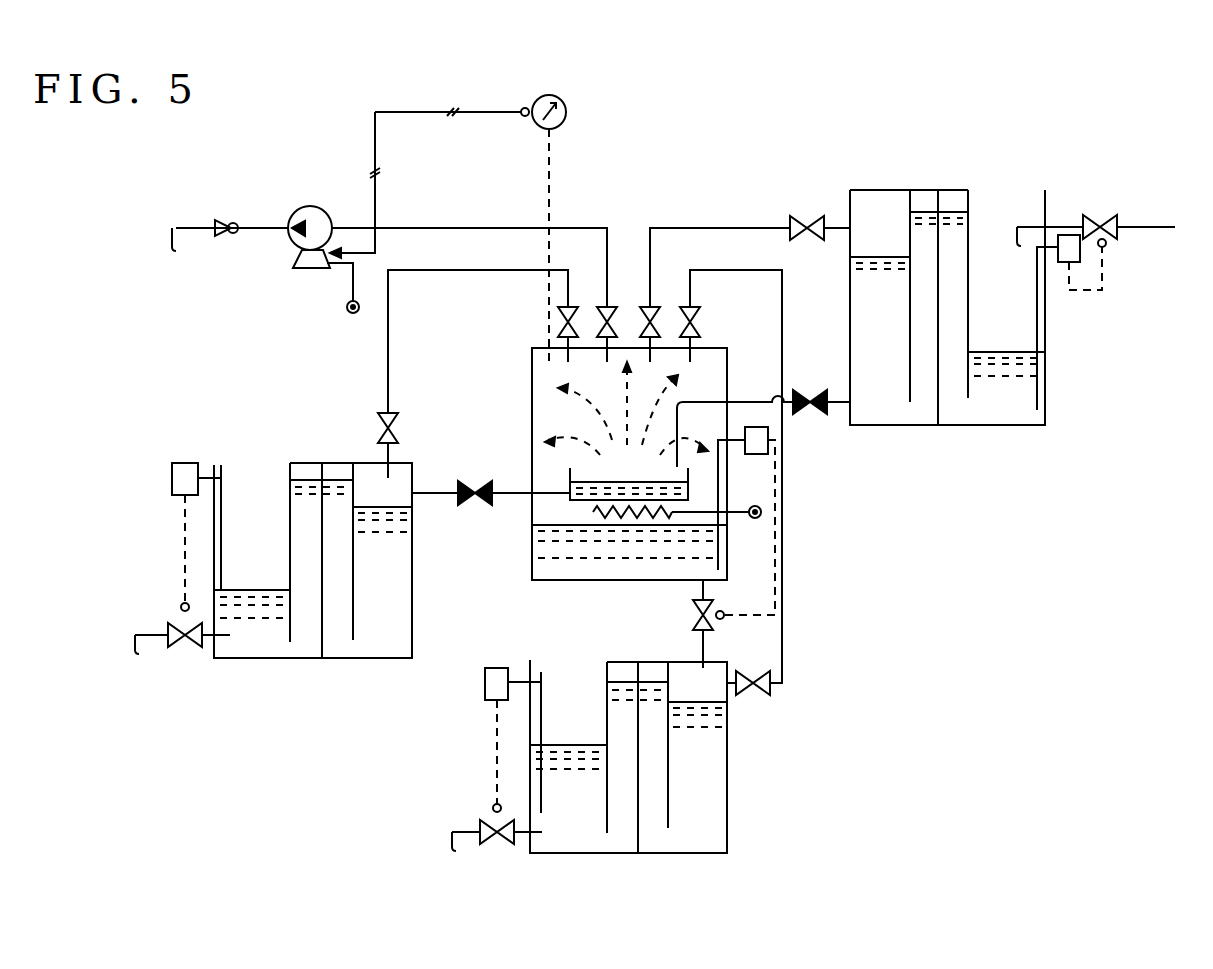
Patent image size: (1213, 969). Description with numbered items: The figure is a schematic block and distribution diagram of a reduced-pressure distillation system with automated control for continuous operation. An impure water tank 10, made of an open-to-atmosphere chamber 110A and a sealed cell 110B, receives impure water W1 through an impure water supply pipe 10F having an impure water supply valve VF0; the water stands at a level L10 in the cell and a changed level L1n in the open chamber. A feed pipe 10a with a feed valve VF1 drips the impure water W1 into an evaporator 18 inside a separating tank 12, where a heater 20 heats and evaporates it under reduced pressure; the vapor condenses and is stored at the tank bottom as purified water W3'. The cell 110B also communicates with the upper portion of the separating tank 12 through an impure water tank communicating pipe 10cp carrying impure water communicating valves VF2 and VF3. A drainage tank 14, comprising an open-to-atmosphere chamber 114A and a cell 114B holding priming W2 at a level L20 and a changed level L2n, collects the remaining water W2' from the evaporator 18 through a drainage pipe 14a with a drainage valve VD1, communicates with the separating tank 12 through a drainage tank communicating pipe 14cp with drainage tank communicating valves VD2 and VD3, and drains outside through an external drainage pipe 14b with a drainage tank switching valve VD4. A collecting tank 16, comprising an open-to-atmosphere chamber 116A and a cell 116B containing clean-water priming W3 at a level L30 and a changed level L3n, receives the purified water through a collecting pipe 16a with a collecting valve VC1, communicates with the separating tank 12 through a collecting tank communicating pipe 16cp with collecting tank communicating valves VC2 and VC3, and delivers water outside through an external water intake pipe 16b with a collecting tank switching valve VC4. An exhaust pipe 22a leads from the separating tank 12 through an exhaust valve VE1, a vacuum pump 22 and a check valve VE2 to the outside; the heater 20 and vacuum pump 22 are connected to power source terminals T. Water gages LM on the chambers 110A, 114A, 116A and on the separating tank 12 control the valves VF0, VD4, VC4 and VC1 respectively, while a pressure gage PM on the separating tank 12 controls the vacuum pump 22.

The impure water tank 10 is at (903, 183).
The feed pipe 10a is at (745, 402).
The impure water tank communicating pipe 10cp is at (690, 227).
The impure water supply pipe 10F is at (1163, 227).
The separating tank 12 is at (525, 351).
The drainage tank 14 is at (280, 460).
The drainage pipe 14a is at (510, 494).
The external drainage pipe 14b is at (140, 635).
The drainage tank communicating pipe 14cp is at (388, 380).
The collecting tank 16 is at (731, 777).
The collecting pipe 16a is at (705, 656).
The external water intake pipe 16b is at (455, 849).
The collecting tank communicating pipe 16cp is at (783, 590).
The evaporator 18 is at (568, 498).
The heater 20 is at (608, 516).
The vacuum pump 22 is at (327, 207).
The exhaust pipe 22a is at (488, 227).
The open-to-atmosphere chamber 110A is at (1008, 403).
The cell 110B is at (883, 403).
The open-to-atmosphere chamber 114A is at (275, 634).
The cell 114B is at (383, 629).
The open-to-atmosphere chamber 116A is at (566, 823).
The cell 116B is at (696, 819).
The exhaust valve VE1 is at (602, 307).
The check valve VE2 is at (226, 220).
The impure water supply valve VF0 is at (1095, 215).
The feed valve VF1 is at (808, 390).
The impure water communicating valve VF2 is at (655, 307).
The impure water communicating valve VF3 is at (803, 216).
The drainage valve VD1 is at (470, 484).
The drainage tank communicating valve VD2 is at (563, 322).
The drainage tank communicating valve VD3 is at (378, 430).
The drainage tank switching valve VD4 is at (182, 648).
The collecting valve VC1 is at (692, 620).
The collecting tank communicating valve VC2 is at (700, 330).
The collecting tank communicating valve VC3 is at (758, 697).
The collecting tank switching valve VC4 is at (487, 820).
The pressure gage PM is at (495, 228).
The water gage LM is at (768, 432).
The power source terminal T is at (545, 390).
The impure water W1 is at (1025, 395).
The priming W2 is at (225, 691).
The remaining water W2' is at (534, 452).
The priming W3 is at (618, 866).
The purified water W3' is at (619, 579).
The level L10 is at (880, 248).
The changed level L1n is at (1006, 349).
The level L20 is at (382, 505).
The changed level L2n is at (252, 590).
The level L30 is at (697, 701).
The changed level L3n is at (568, 742).